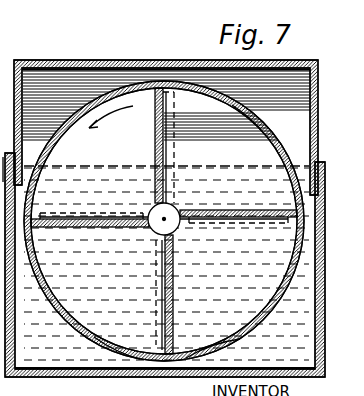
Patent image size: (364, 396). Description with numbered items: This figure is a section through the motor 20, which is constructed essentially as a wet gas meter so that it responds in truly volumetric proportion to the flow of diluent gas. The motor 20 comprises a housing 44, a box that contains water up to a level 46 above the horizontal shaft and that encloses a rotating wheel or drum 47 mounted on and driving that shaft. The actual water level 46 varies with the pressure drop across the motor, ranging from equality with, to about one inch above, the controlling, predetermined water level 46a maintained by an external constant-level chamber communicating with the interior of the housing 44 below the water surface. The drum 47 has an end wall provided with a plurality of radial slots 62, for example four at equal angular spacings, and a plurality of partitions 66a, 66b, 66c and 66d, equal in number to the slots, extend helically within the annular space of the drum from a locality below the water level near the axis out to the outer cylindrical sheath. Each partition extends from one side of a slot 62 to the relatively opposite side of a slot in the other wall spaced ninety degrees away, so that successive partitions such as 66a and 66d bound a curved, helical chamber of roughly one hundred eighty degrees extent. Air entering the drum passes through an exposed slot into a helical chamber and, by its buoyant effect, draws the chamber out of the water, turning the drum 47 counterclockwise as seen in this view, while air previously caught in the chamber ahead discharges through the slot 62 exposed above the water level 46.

The motor 20 is at (291, 57).
The housing 44 is at (70, 60).
The water level 46 is at (40, 164).
The predetermined water level 46a is at (254, 163).
The drum 47 is at (148, 92).
The radial slots 62 is at (177, 138).
The partition 66a is at (165, 78).
The partition 66b is at (237, 123).
The partition 66c is at (205, 336).
The partition 66d is at (128, 336).